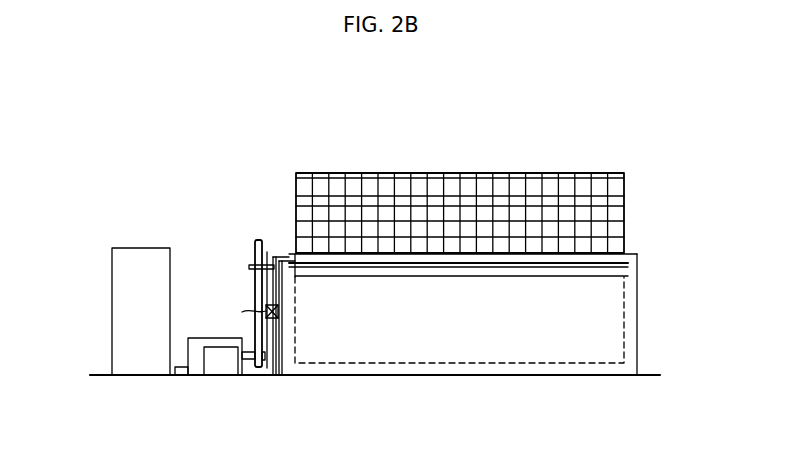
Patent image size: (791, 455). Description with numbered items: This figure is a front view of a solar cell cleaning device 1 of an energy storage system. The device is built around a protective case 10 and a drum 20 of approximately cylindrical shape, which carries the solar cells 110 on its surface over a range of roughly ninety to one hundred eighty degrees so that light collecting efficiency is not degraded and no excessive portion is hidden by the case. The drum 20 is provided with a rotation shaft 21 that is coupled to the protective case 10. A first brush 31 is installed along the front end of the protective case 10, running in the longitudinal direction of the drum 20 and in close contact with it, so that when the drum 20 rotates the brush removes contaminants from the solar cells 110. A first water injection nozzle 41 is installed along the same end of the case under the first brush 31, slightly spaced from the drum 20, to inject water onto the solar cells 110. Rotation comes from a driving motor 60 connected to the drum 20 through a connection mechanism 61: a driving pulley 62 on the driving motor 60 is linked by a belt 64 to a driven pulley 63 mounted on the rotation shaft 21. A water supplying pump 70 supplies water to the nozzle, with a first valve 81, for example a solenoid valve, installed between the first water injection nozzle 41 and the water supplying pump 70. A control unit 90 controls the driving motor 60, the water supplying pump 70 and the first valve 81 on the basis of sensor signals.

The solar cell cleaning device 1 is at (618, 126).
The protective case 10 is at (637, 327).
The drum 20 is at (499, 175).
The solar cells 110 is at (535, 188).
The first brush 31 is at (452, 258).
The first water injection nozzle 41 is at (520, 268).
The control unit 90 is at (113, 303).
The water supplying pump 70 is at (221, 368).
The driving motor 60 is at (187, 366).
The connection mechanism 61 is at (204, 250).
The driving pulley 62 is at (253, 347).
The driven pulley 63 is at (252, 243).
The belt 64 is at (254, 257).
The rotation shaft 21 is at (268, 247).
The first valve 81 is at (278, 312).